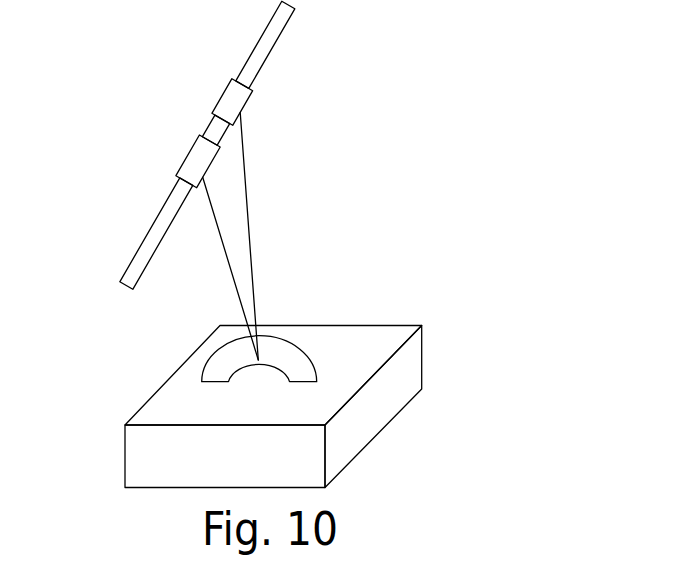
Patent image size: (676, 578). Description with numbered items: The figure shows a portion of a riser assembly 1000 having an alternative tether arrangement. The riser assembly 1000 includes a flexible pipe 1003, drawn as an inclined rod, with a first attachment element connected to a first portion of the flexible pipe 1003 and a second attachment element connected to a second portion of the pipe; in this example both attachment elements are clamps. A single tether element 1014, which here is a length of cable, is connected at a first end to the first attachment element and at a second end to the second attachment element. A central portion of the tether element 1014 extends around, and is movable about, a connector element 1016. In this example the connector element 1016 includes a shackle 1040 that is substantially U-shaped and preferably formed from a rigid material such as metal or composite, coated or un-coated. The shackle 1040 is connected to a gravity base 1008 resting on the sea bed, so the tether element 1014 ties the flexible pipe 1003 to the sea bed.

The riser assembly 1000 is at (372, 155).
The flexible pipe 1003 is at (293, 24).
The tether element 1014 is at (251, 207).
The shackle 1040 is at (292, 341).
The connector element 1016 is at (197, 342).
The gravity base 1008 is at (390, 423).